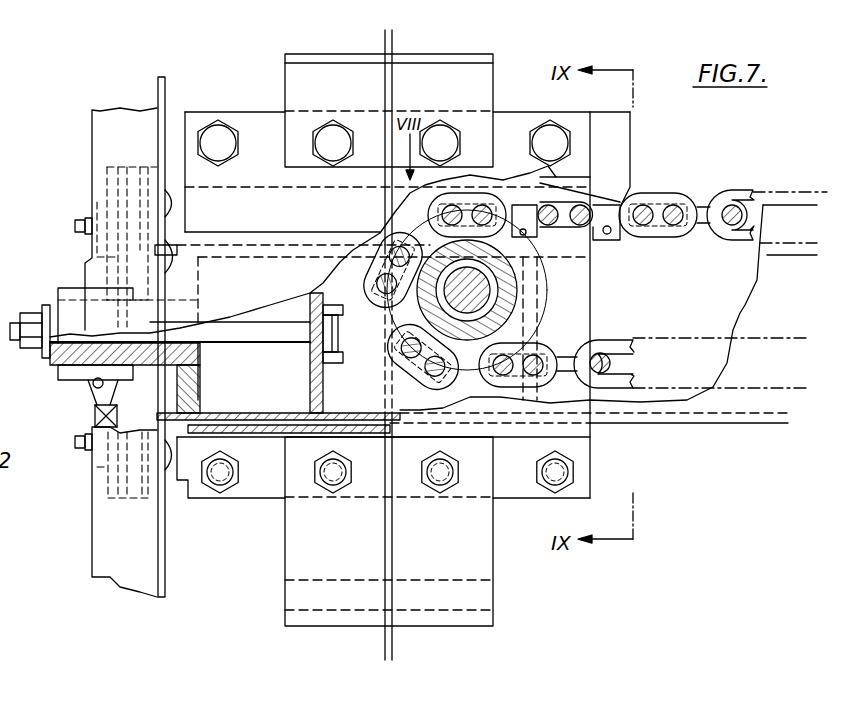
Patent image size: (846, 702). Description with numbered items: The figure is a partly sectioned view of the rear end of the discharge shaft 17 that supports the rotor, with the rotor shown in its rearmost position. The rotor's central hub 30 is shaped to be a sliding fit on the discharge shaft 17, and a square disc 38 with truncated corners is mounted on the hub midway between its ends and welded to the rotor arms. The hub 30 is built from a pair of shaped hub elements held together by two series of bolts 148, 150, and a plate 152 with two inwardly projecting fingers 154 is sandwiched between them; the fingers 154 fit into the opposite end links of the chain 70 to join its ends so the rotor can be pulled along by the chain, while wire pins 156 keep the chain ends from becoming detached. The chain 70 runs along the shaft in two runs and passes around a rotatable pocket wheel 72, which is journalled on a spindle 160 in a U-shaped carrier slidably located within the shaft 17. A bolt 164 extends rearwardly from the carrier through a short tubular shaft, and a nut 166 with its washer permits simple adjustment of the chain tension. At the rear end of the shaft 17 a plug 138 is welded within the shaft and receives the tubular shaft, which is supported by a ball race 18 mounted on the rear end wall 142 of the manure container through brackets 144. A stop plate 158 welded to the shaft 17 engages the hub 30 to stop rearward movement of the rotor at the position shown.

The discharge shaft 17 is at (347, 420).
The ball race 18 is at (80, 391).
The central hub 30 is at (275, 470).
The square disc 38 is at (385, 565).
The chain 70 is at (733, 196).
The pocket wheel 72 is at (520, 292).
The plug 138 is at (188, 383).
The rear end wall 142 is at (160, 540).
The brackets 144 is at (107, 528).
The bolts 148 is at (552, 138).
The bolts 150 is at (275, 455).
The plate 152 is at (600, 130).
The fingers 154 is at (590, 183).
The wire pins 156 is at (609, 234).
The stop plate 158 is at (182, 180).
The spindle 160 is at (455, 295).
The bolt 164 is at (290, 327).
The nut 166 is at (32, 328).